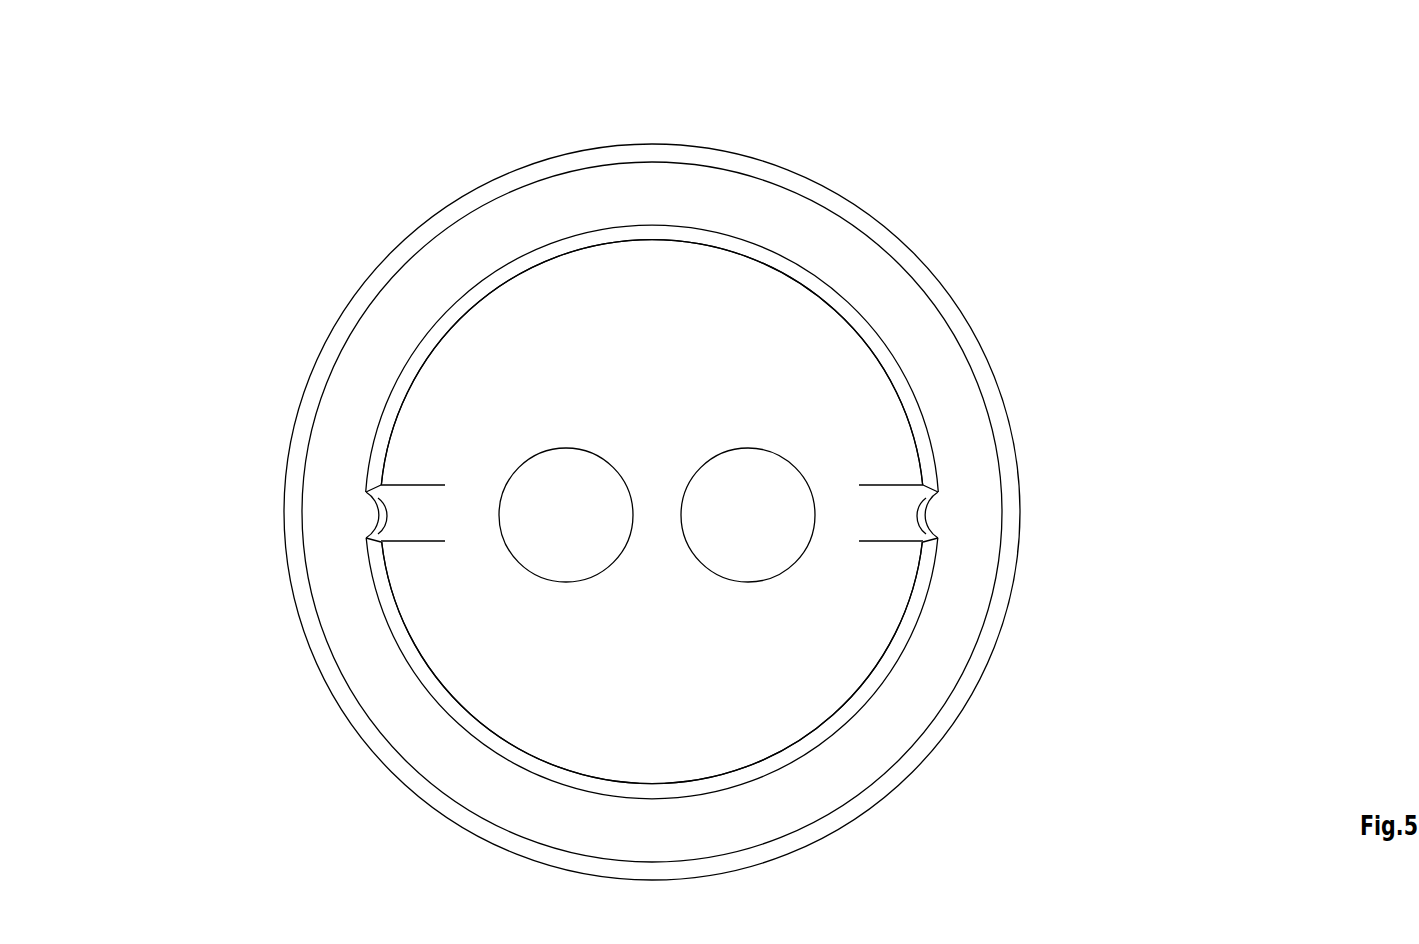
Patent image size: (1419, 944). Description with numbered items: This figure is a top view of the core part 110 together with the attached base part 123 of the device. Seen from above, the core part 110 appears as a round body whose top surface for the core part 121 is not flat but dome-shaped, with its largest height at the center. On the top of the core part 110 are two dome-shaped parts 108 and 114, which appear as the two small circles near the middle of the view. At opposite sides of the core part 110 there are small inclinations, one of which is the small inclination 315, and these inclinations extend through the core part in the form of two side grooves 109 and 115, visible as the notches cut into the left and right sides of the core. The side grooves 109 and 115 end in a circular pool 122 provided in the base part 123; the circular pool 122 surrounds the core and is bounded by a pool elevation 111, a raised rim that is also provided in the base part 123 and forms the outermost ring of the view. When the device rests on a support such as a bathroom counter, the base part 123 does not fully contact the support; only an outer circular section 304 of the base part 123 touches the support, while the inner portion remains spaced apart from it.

The core part 110 is at (541, 305).
The base part 123 is at (368, 357).
The pool elevation 111 is at (1010, 418).
The circular pool 122 is at (900, 712).
The top surface for the core part 121 is at (445, 650).
The dome-shaped part 114 is at (563, 448).
The dome-shaped part 108 is at (745, 448).
The side groove 115 is at (380, 518).
The small inclination 315 is at (432, 528).
The side groove 109 is at (910, 511).
The outer circular section 304 is at (872, 516).